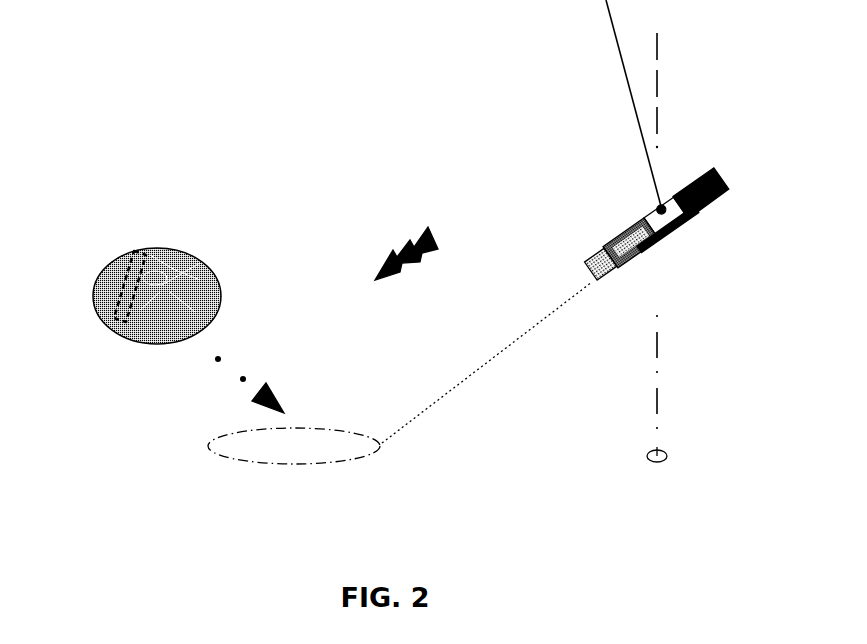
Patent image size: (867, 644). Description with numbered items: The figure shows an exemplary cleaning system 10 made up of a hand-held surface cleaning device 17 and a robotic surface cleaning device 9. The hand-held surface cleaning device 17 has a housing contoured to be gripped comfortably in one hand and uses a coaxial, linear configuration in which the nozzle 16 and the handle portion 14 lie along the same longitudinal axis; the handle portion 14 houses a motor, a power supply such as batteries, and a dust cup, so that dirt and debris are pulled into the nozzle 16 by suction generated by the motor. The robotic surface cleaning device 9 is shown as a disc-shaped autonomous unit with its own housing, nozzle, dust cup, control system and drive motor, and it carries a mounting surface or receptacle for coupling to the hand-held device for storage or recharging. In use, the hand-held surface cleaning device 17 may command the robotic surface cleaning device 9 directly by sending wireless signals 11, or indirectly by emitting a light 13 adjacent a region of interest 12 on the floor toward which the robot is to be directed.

The robotic surface cleaning device 9 is at (107, 266).
The cleaning system 10 is at (156, 159).
The wireless signals 11 is at (402, 250).
The region of interest 12 is at (208, 452).
The light 13 is at (540, 323).
The handle portion 14 is at (708, 172).
The nozzle 16 is at (598, 268).
The hand-held surface cleaning device 17 is at (676, 267).